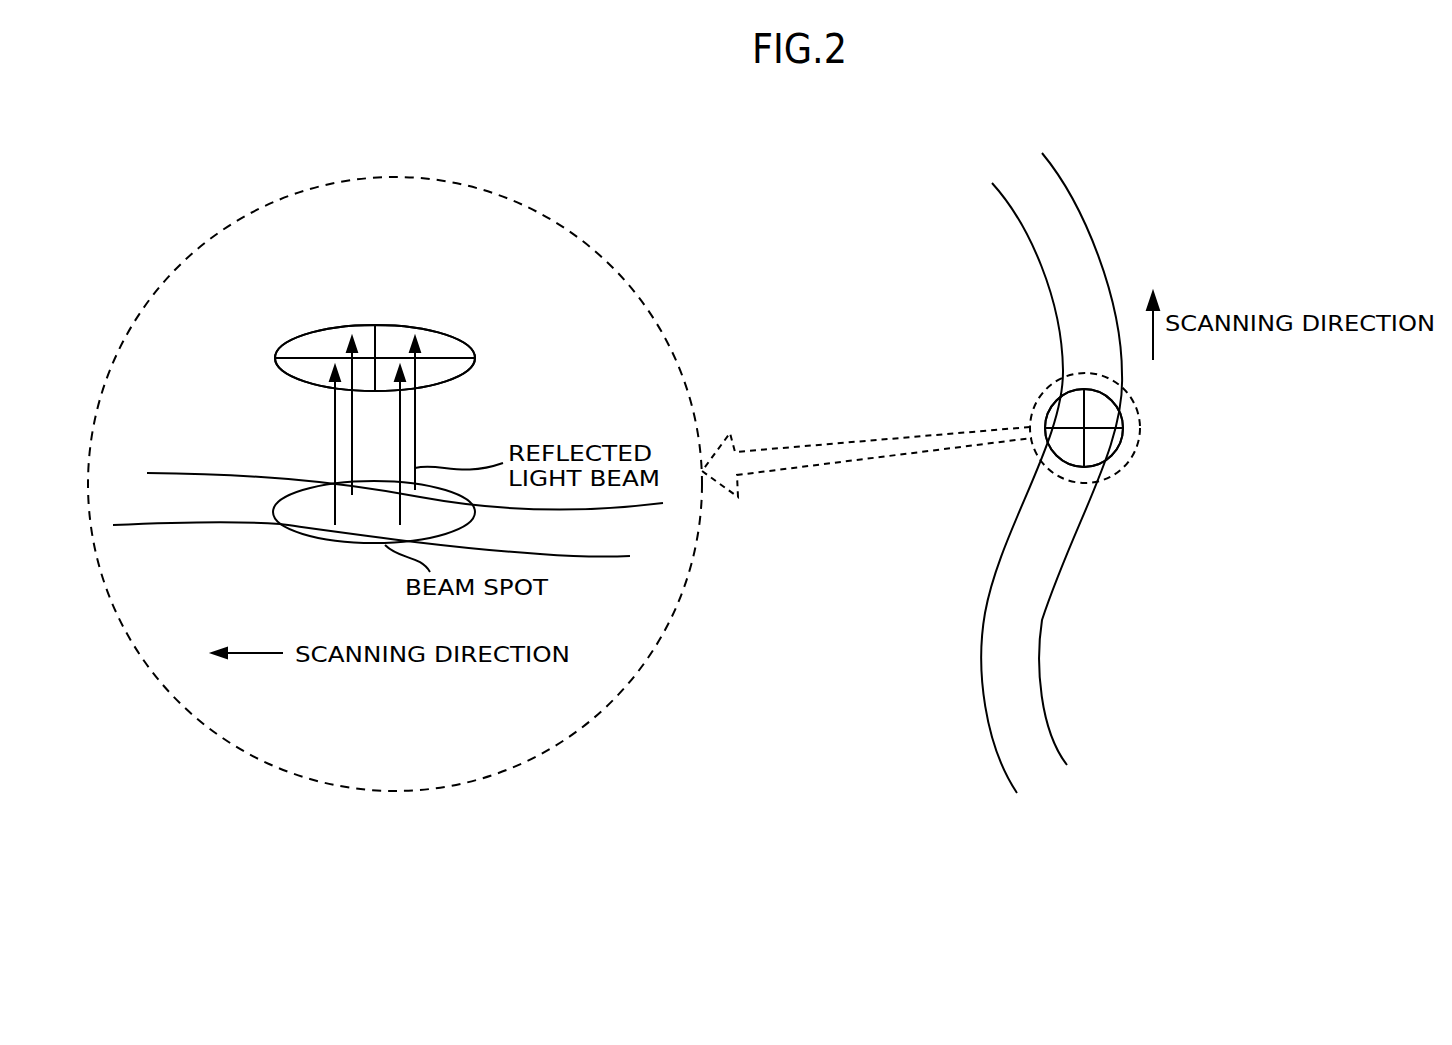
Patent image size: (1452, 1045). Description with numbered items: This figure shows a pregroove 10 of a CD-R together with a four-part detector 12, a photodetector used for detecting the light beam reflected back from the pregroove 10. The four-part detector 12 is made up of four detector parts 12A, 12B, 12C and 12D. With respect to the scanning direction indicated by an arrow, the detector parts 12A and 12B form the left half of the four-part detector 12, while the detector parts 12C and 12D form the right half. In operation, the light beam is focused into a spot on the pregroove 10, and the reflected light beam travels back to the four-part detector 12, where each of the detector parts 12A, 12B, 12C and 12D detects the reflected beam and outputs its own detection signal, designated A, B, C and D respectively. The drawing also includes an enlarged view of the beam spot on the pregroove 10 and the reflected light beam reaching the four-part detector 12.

The pregroove 10 is at (197, 508).
The 4-part detector 12 is at (280, 325).
The detector part 12A is at (300, 383).
The detector part 12B is at (443, 383).
The detector part 12C is at (362, 322).
The detector part 12D is at (452, 330).